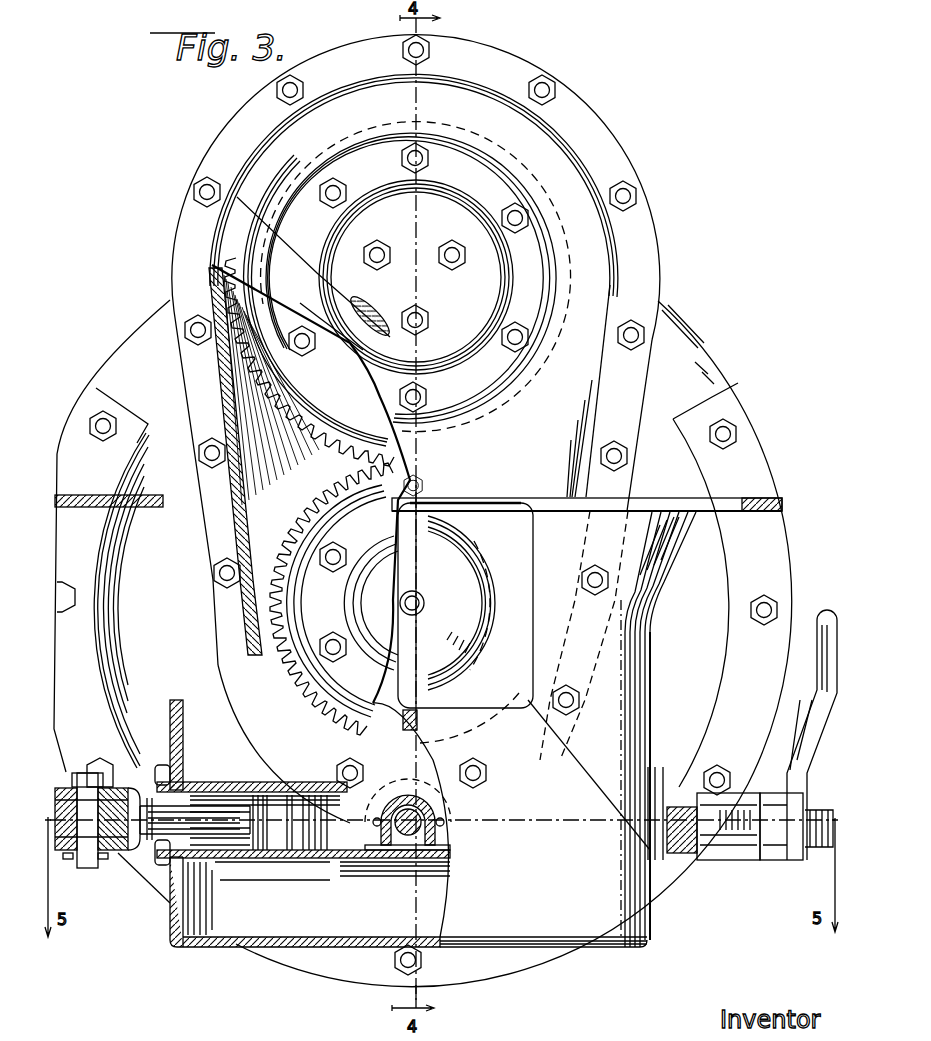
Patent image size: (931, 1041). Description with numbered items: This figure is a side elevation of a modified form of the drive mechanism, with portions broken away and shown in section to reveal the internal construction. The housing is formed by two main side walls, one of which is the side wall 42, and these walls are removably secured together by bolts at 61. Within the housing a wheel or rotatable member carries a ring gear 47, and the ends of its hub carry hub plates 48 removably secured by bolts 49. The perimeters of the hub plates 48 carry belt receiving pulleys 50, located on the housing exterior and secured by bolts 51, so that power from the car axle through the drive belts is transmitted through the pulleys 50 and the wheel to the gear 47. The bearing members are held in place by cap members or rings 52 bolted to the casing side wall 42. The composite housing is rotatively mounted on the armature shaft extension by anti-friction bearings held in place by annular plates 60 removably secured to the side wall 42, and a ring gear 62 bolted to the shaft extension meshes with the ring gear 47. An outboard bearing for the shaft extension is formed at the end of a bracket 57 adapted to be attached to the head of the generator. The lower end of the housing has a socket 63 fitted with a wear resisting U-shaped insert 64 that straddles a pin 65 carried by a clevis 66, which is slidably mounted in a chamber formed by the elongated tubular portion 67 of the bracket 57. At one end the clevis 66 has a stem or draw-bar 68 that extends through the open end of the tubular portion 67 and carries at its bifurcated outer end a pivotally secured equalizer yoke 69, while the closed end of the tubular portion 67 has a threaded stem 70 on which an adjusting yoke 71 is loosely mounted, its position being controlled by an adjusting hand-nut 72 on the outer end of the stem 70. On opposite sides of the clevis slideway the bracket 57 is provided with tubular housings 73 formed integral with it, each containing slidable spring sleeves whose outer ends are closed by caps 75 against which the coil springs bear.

The main side wall 42 is at (625, 292).
The ring gear 47 is at (309, 330).
The hub plate 48 is at (454, 352).
The bolts 49 is at (378, 268).
The belt receiving pulley 50 is at (571, 158).
The bolts 51 is at (430, 161).
The cap member or ring 52 is at (290, 268).
The bracket 57 is at (513, 940).
The annular member or plate 60 is at (480, 493).
The bolts 61 is at (430, 484).
The ring gear 62 is at (345, 473).
The socket 63 is at (448, 807).
The U-shaped insert 64 is at (400, 798).
The pin 65 is at (418, 852).
The clevis 66 is at (282, 848).
The tubular portion 67 is at (242, 783).
The stem or draw-bar 68 is at (207, 828).
The equalizer yoke 69 is at (118, 858).
The threaded stem 70 is at (682, 845).
The adjusting yoke 71 is at (742, 837).
The adjusting hand-nut 72 is at (788, 855).
The tubular housing 73 is at (240, 873).
The cap 75 is at (676, 900).